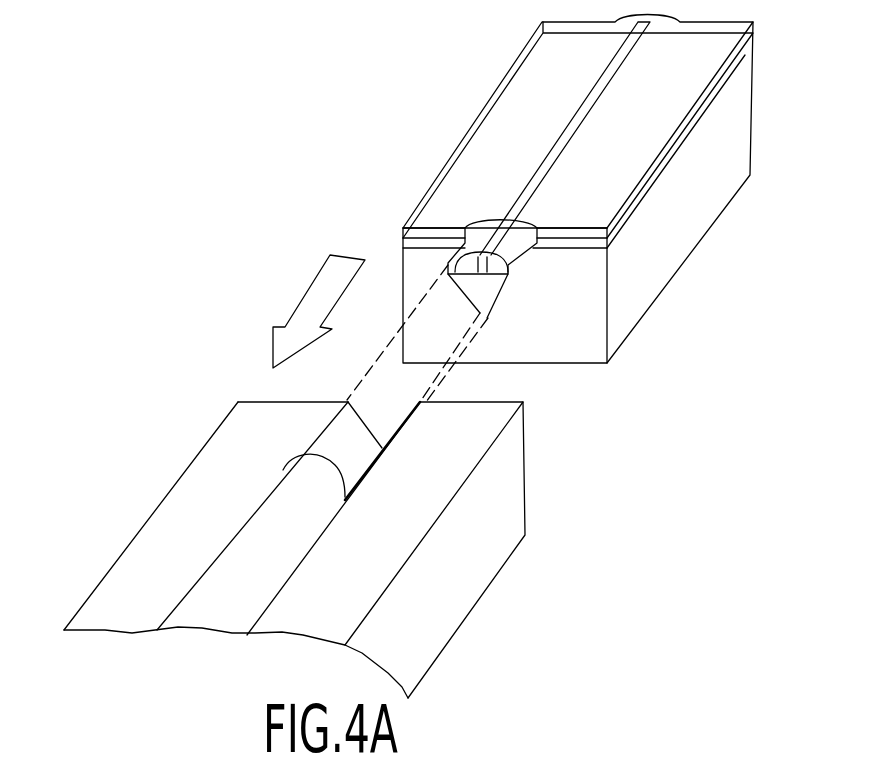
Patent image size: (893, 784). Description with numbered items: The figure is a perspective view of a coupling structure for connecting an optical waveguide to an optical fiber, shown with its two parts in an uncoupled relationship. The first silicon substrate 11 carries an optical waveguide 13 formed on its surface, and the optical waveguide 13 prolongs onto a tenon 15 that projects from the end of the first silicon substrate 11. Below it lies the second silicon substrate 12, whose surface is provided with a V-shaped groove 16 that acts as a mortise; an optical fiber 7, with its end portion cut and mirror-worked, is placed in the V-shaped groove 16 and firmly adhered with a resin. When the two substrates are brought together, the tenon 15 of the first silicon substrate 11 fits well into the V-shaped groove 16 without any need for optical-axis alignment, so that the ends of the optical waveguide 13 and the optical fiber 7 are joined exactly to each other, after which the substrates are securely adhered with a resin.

The first silicon substrate 11 is at (507, 109).
The optical waveguide 13 is at (540, 165).
The tenon 15 is at (513, 277).
The second silicon substrate 12 is at (525, 433).
The optical fiber 7 is at (292, 547).
The V-shaped groove 16 is at (328, 416).